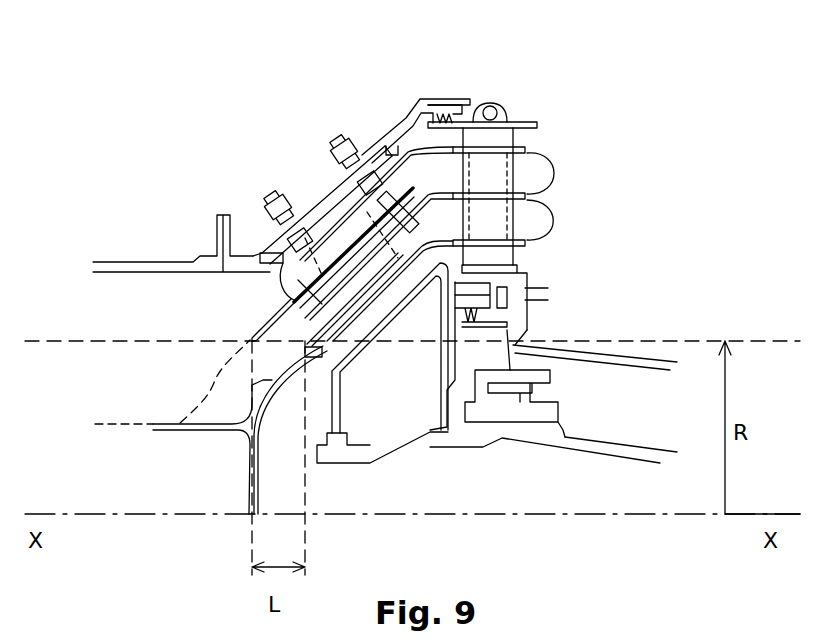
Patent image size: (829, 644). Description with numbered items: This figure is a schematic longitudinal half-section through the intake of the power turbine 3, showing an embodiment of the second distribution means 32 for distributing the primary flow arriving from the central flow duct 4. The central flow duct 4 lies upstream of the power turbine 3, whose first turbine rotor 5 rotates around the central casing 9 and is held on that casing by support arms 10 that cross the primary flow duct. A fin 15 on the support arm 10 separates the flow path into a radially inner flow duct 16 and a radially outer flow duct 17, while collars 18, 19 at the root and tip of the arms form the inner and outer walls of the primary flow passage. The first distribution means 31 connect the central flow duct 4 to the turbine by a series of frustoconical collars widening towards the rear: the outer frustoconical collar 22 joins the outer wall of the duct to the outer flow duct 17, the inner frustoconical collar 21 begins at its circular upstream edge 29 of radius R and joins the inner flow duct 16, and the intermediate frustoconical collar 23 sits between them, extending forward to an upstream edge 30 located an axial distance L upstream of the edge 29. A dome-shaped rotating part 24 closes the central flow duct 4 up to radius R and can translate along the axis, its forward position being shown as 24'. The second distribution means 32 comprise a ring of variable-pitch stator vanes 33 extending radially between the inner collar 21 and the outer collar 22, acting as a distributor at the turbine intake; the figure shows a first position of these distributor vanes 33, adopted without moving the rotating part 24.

The power turbine 3 is at (576, 89).
The central flow duct 4 is at (93, 300).
The first turbine rotor 5 is at (640, 363).
The central casing 9 is at (540, 440).
The support arm 10 is at (519, 170).
The fin 15 is at (533, 197).
The inner flow duct 16 is at (552, 221).
The outer flow duct 17 is at (549, 176).
The collar 18 is at (533, 244).
The collar 19 is at (533, 135).
The inner frustoconical collar 21 is at (380, 314).
The outer frustoconical collar 22 is at (320, 215).
The intermediate frustoconical collar 23 is at (345, 250).
The rotating part 24 is at (211, 430).
The forward position of the rotating part 24' is at (189, 381).
The upstream edge of the inner collar 29 is at (307, 350).
The upstream edge of the intermediate collar 30 is at (248, 333).
The first distribution means 31 is at (368, 120).
The second distribution means 32 is at (259, 189).
The variable-pitch stator vane 33 is at (297, 280).